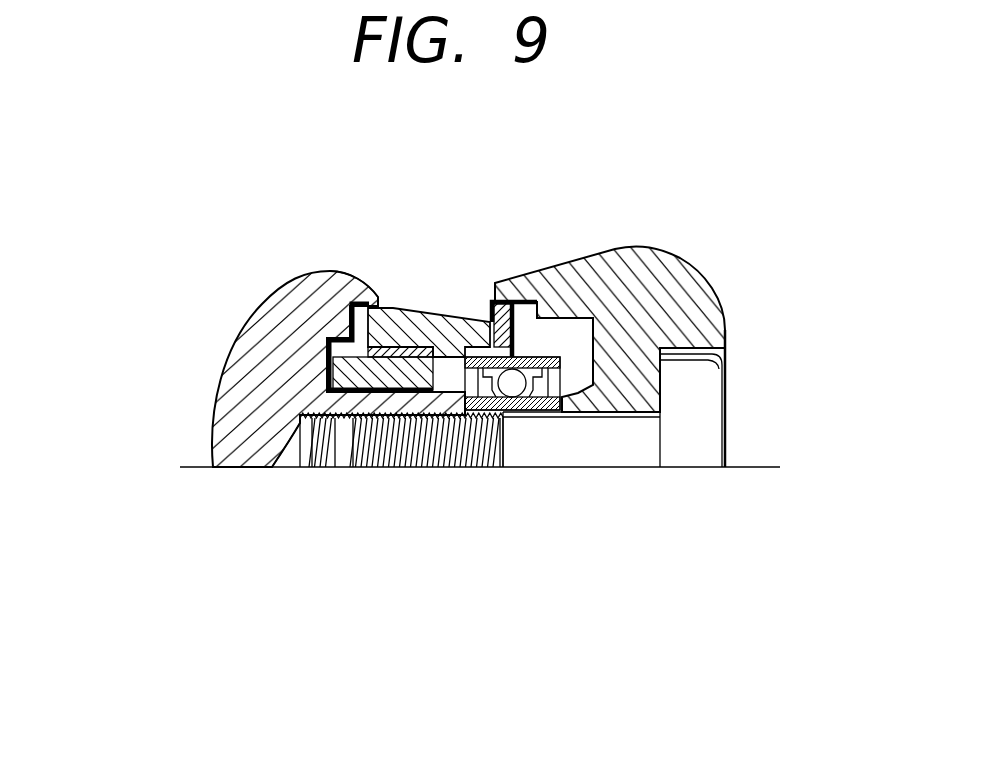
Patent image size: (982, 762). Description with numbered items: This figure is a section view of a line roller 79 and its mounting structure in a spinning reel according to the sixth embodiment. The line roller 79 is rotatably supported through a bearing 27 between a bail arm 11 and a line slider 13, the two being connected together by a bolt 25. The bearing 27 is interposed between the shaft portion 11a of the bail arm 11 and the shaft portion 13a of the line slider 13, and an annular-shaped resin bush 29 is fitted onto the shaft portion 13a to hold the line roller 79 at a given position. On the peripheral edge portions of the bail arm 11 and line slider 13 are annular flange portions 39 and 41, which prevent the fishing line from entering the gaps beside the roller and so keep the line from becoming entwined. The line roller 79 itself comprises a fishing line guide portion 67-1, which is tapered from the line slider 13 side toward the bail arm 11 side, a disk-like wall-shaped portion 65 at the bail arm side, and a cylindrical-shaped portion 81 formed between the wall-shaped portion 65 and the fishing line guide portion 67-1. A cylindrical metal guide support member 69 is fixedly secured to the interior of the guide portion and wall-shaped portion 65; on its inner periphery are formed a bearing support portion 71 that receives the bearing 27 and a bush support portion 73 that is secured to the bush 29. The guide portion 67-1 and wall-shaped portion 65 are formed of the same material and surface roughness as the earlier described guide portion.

The bail arm 11 is at (737, 331).
The shaft portion 11a is at (573, 413).
The line slider 13 is at (204, 410).
The shaft portion 13a is at (462, 390).
The bolt 25 is at (722, 414).
The bearing 27 is at (516, 398).
The resin bush 29 is at (327, 375).
The flange portion 39 is at (496, 293).
The flange portion 41 is at (376, 298).
The wall-shaped portion 65 is at (505, 300).
The fishing line guide portion 67-1 is at (405, 304).
The guide support member 69 is at (434, 416).
The bearing support portion 71 is at (503, 416).
The bush support portion 73 is at (352, 338).
The line roller 79 is at (423, 305).
The cylindrical-shaped portion 81 is at (482, 303).